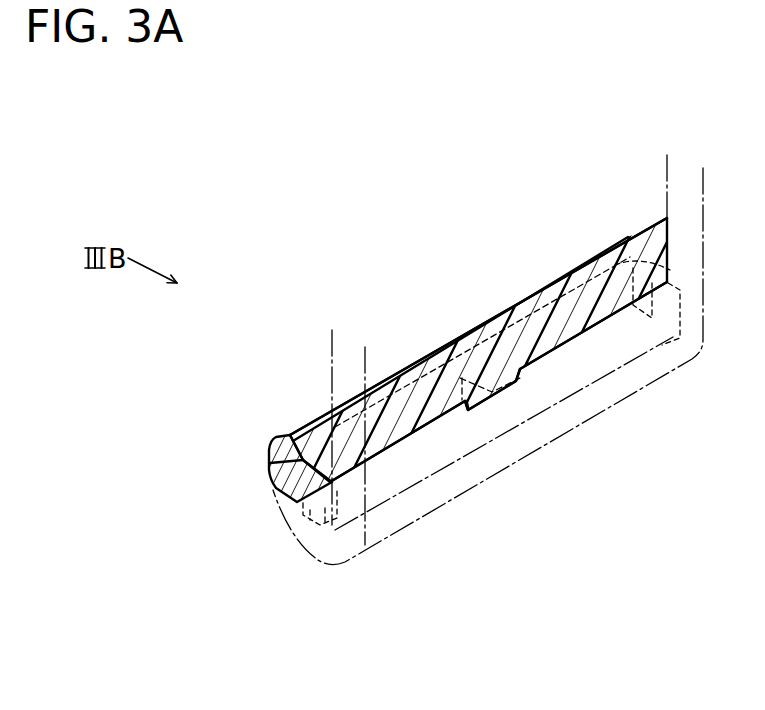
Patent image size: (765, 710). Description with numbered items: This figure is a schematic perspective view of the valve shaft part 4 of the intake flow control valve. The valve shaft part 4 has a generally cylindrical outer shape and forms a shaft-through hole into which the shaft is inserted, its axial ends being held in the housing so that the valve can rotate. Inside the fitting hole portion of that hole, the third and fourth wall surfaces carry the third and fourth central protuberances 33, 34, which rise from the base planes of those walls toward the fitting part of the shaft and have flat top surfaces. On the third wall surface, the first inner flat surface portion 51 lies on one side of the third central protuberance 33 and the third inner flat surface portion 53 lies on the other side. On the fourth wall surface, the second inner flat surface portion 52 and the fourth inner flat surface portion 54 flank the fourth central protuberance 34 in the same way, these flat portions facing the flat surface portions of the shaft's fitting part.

The valve shaft part 4 is at (272, 442).
The third central protuberance 33 is at (473, 400).
The fourth central protuberance 34 is at (507, 390).
The first inner flat surface portion 51 is at (502, 310).
The second inner flat surface portion 52 is at (658, 312).
The third inner flat surface portion 53 is at (298, 477).
The fourth inner flat surface portion 54 is at (305, 500).